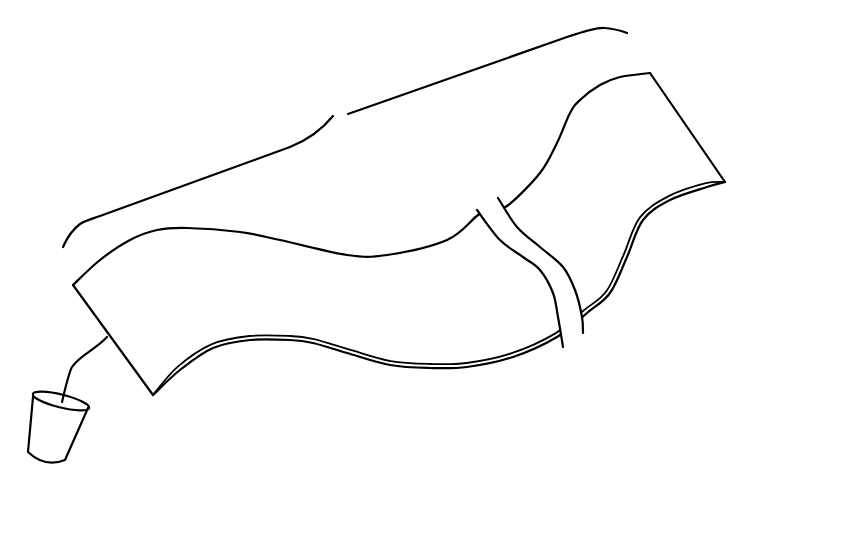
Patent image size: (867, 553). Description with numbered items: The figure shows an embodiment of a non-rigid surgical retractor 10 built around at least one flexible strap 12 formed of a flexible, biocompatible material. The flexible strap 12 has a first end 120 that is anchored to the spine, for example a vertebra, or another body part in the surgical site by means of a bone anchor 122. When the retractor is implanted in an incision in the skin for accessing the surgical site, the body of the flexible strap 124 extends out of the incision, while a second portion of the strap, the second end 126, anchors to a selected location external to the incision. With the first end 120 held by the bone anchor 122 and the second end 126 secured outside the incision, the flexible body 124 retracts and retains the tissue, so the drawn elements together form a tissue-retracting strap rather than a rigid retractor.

The non-rigid surgical retractor 10 is at (175, 127).
The flexible strap 12 is at (348, 114).
The first end 120 is at (253, 260).
The bone anchor 122 is at (67, 427).
The flexible body 124 is at (477, 338).
The second end 126 is at (683, 115).